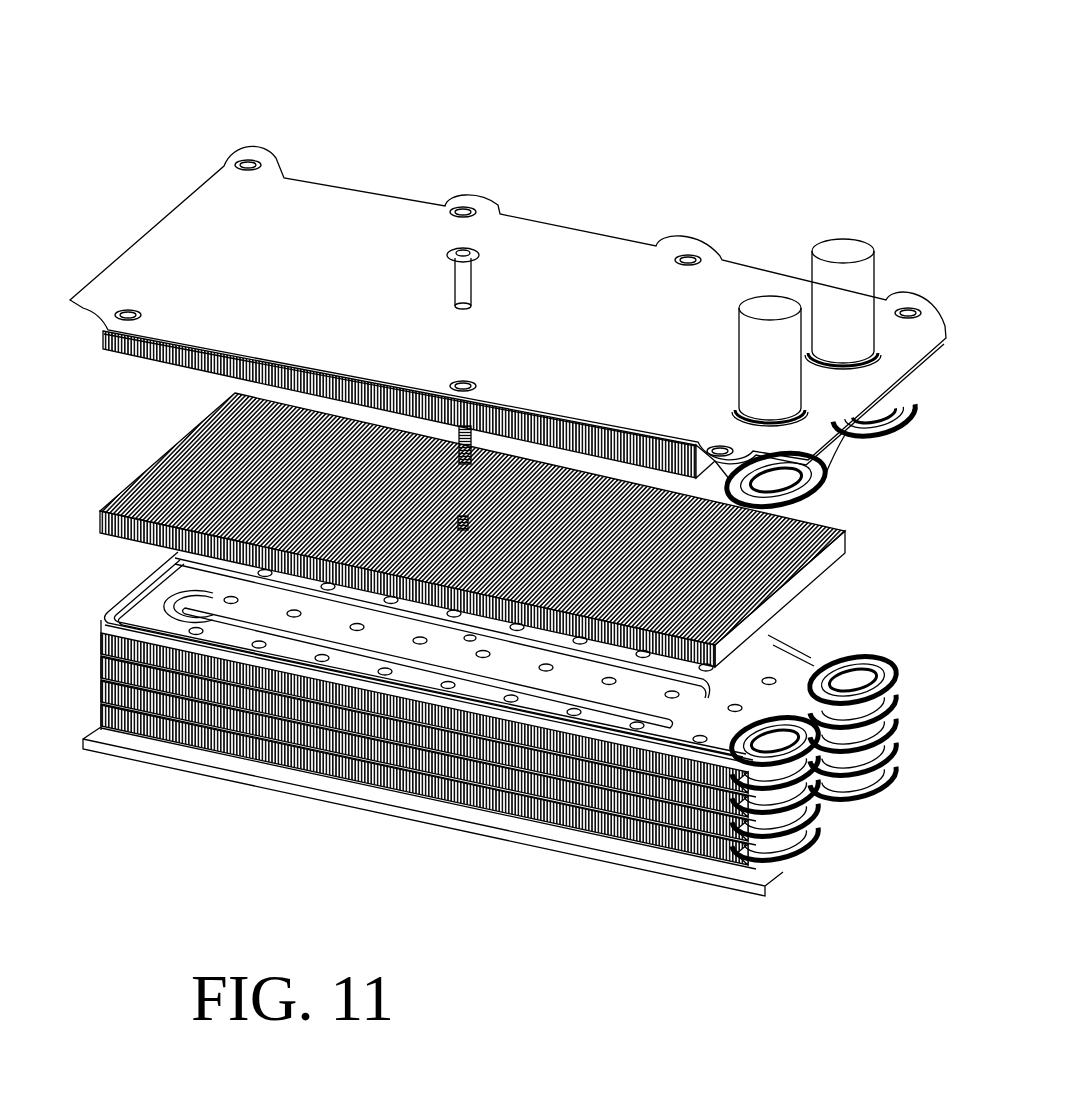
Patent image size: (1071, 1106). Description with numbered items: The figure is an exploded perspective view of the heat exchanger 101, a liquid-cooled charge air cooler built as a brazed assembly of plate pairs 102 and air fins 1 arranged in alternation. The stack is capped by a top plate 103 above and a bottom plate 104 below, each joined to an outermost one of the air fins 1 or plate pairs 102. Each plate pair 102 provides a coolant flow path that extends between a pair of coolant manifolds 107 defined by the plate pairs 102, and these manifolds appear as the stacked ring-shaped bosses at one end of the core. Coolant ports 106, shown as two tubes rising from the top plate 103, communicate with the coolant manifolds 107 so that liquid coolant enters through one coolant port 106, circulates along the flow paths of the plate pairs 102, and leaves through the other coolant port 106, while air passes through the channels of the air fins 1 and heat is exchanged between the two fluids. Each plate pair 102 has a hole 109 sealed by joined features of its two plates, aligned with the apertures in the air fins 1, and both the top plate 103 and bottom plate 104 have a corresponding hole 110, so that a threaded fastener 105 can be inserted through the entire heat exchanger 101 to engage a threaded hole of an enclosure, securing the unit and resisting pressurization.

The heat exchanger 101 is at (547, 117).
The air fin 1 is at (92, 505).
The plate pair 102 is at (892, 411).
The top plate 103 is at (642, 268).
The bottom plate 104 is at (590, 852).
The threaded fastener 105 is at (455, 272).
The coolant port 106 is at (832, 240).
The coolant manifold 107 is at (850, 663).
The hole 109 is at (462, 628).
The hole 110 is at (467, 298).